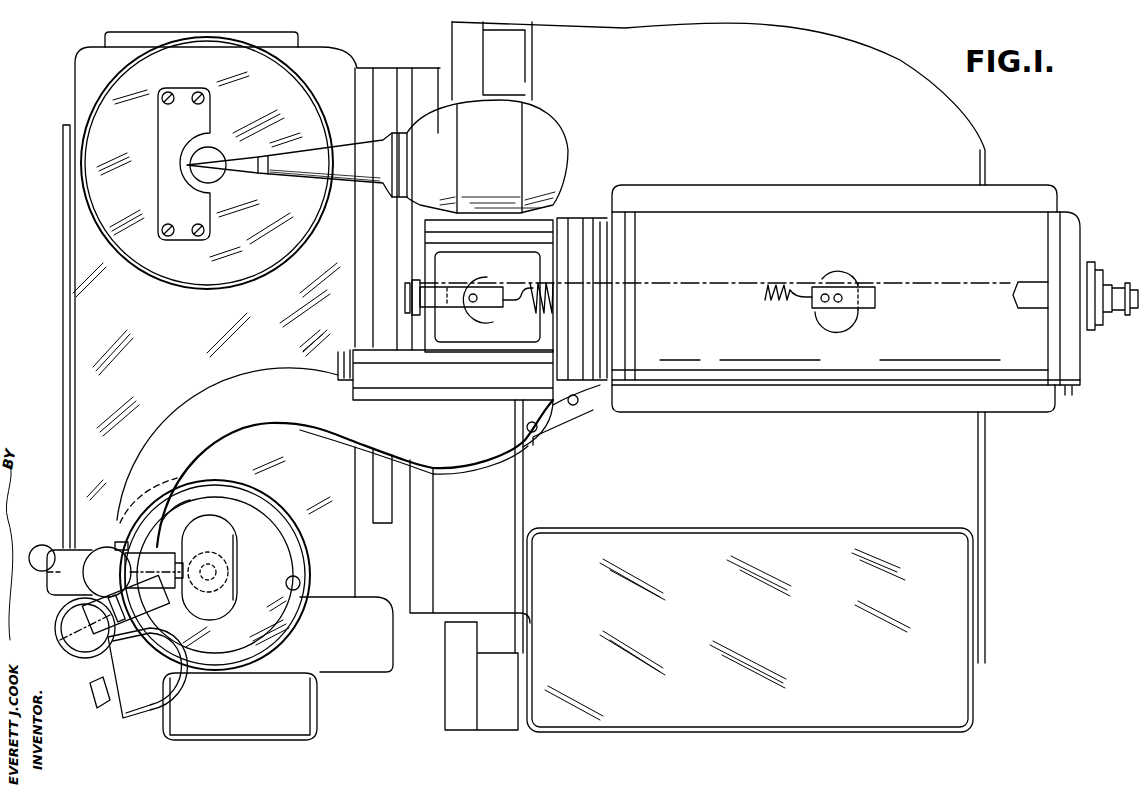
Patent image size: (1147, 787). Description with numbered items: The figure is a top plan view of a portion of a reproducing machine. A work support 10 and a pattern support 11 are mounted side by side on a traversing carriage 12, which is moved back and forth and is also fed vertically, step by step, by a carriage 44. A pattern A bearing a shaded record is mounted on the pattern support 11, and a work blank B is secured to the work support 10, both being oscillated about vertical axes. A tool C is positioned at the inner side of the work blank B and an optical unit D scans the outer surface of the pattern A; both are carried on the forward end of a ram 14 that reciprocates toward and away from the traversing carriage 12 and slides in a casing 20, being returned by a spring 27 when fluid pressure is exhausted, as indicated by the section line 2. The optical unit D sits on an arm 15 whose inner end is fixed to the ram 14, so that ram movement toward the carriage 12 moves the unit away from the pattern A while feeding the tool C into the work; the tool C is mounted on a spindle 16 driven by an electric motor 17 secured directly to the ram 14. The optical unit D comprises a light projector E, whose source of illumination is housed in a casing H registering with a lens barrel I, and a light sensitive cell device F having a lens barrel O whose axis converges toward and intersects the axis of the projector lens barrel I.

The section line 2- 2 is at (390, 293).
The work support 10 is at (305, 228).
The pattern support 11 is at (258, 522).
The traversing carriage 12 is at (72, 352).
The ram 14 is at (479, 286).
The arm 15 is at (255, 380).
The spindle 16 is at (293, 172).
The electric motor 17 is at (548, 140).
The casing 20 is at (822, 215).
The spring 27 is at (786, 284).
The carriage 44 is at (450, 600).
The pattern A is at (225, 560).
The work blank B is at (158, 177).
The tool C is at (226, 163).
The optical unit D is at (101, 540).
The light projector E is at (138, 552).
The light sensitive cell device F is at (80, 660).
The casing H is at (72, 548).
The lens barrel I is at (165, 548).
The lens barrel O is at (125, 604).